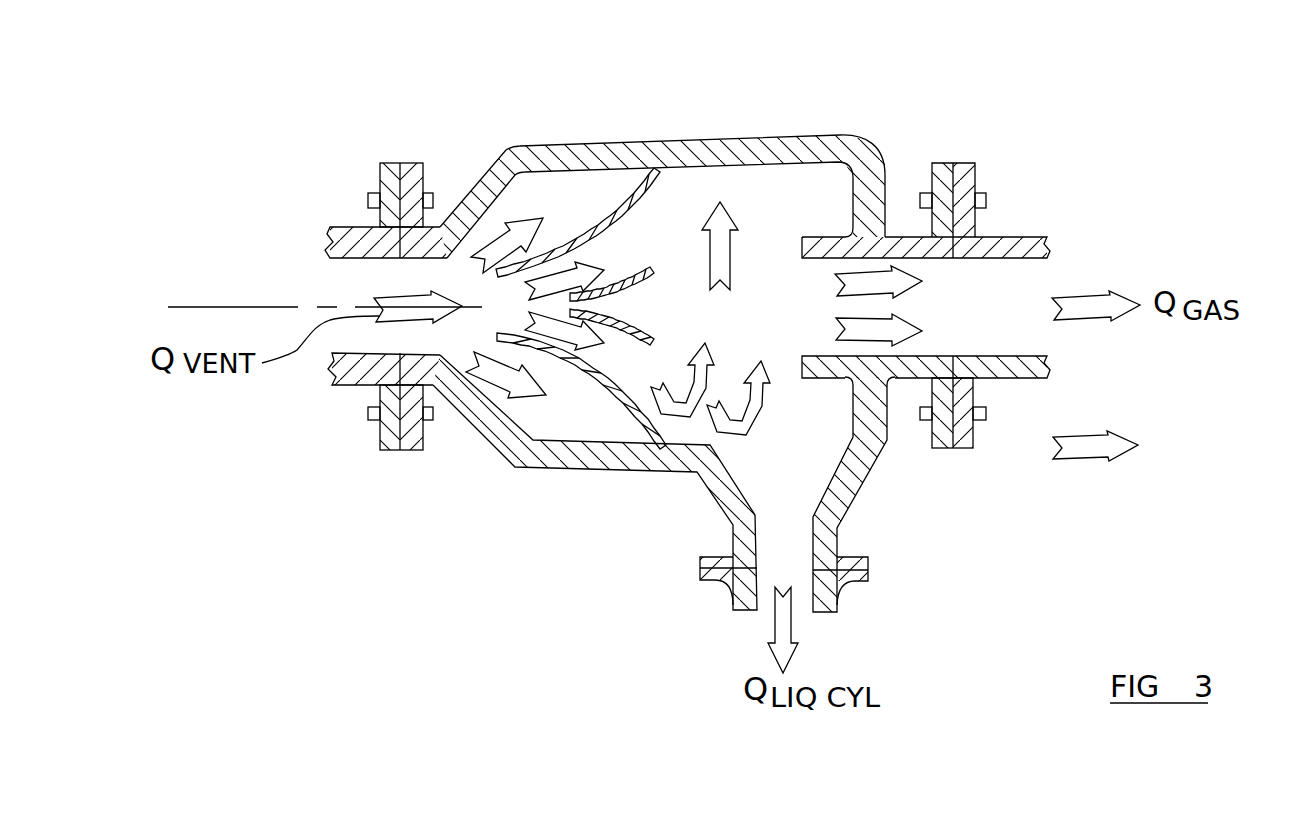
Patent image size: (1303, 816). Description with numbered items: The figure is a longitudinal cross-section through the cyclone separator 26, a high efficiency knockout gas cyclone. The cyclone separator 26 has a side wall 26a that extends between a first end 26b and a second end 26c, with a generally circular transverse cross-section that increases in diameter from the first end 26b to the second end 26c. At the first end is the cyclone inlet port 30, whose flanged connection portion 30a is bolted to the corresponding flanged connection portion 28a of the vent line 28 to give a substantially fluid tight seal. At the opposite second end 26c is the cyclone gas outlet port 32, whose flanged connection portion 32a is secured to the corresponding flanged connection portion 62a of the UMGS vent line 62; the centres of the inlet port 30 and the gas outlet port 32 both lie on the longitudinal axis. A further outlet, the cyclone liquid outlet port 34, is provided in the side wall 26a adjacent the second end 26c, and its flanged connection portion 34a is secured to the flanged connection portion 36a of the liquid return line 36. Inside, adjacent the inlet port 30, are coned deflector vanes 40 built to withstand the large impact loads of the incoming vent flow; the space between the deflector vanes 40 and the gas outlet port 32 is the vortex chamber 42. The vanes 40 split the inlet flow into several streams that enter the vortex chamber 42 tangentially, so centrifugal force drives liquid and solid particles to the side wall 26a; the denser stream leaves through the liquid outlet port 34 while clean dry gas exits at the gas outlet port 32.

The cyclone separator 26 is at (700, 132).
The side wall 26a is at (623, 470).
The first end 26b is at (448, 190).
The second end 26c is at (887, 422).
The vent line 28 is at (347, 227).
The flanged connection portion 28a is at (372, 183).
The cyclone inlet port 30 is at (443, 397).
The flanged connection portion 30a is at (432, 215).
The cyclone gas outlet port 32 is at (873, 263).
The flanged connection portion 32a is at (920, 180).
The cyclone liquid outlet port 34 is at (812, 455).
The flanged connection portion 34a is at (700, 568).
The liquid return line 36 is at (837, 595).
The flanged connection portion 36a is at (710, 582).
The coned deflector vanes 40 is at (650, 272).
The vortex chamber 42 is at (762, 262).
The UMGS vent line 62 is at (1003, 240).
The flanged connection portion 62a is at (977, 182).